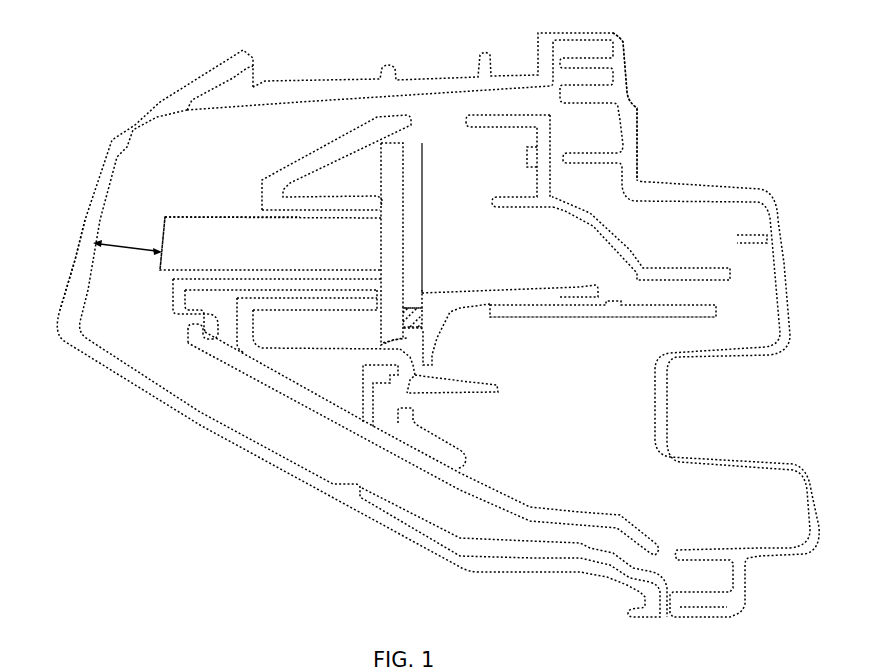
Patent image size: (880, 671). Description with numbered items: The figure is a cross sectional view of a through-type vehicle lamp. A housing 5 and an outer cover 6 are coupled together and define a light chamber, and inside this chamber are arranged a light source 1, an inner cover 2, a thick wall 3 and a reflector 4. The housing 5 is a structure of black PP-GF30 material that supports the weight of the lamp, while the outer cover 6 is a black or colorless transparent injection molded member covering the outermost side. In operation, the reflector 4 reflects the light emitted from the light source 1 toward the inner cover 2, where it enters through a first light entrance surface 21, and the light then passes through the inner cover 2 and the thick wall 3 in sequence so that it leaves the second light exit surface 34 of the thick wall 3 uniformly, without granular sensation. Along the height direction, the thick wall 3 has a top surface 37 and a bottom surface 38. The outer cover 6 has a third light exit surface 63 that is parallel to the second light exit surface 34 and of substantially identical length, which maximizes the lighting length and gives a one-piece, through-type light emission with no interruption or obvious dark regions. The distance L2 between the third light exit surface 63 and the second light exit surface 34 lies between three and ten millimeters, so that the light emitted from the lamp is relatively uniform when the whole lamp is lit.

The light source 1 is at (622, 316).
The inner cover 2 is at (413, 176).
The first light entrance surface 21 is at (420, 227).
The thick wall 3 is at (307, 234).
The second light exit surface 34 is at (163, 235).
The top surface 37 is at (227, 218).
The bottom surface 38 is at (173, 270).
The reflector 4 is at (594, 220).
The housing 5 is at (632, 133).
The outer cover 6 is at (205, 74).
The third light exit surface 63 is at (87, 268).
The distance between third light exit surface and second light exit surface L2 is at (127, 237).